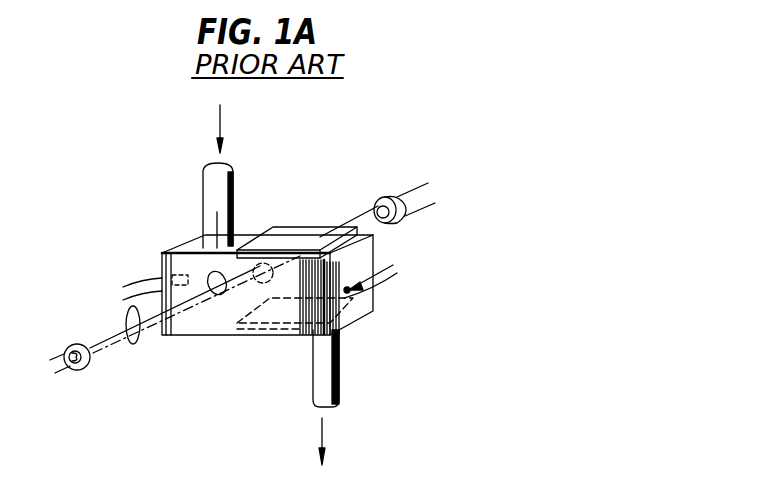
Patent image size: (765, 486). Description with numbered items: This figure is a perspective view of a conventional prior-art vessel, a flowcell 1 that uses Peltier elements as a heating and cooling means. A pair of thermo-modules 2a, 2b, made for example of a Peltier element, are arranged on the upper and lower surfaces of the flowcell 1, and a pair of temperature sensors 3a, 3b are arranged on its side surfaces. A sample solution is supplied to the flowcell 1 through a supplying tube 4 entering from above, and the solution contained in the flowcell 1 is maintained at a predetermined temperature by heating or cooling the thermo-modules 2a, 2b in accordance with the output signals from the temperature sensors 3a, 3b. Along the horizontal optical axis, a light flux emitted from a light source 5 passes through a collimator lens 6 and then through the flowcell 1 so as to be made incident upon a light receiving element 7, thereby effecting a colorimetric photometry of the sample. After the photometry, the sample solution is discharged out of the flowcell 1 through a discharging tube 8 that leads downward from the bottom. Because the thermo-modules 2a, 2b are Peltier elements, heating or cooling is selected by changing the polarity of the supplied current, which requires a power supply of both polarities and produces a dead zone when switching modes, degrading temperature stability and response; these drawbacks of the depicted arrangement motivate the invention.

The flowcell 1 is at (190, 342).
The thermo-module 2a is at (304, 228).
The thermo-module 2b is at (270, 325).
The temperature sensor 3a is at (349, 292).
The temperature sensor 3b is at (182, 277).
The supplying tube 4 is at (203, 200).
The light source 5 is at (84, 371).
The collimator lens 6 is at (135, 346).
The light receiving element 7 is at (391, 196).
The discharging tube 8 is at (318, 388).